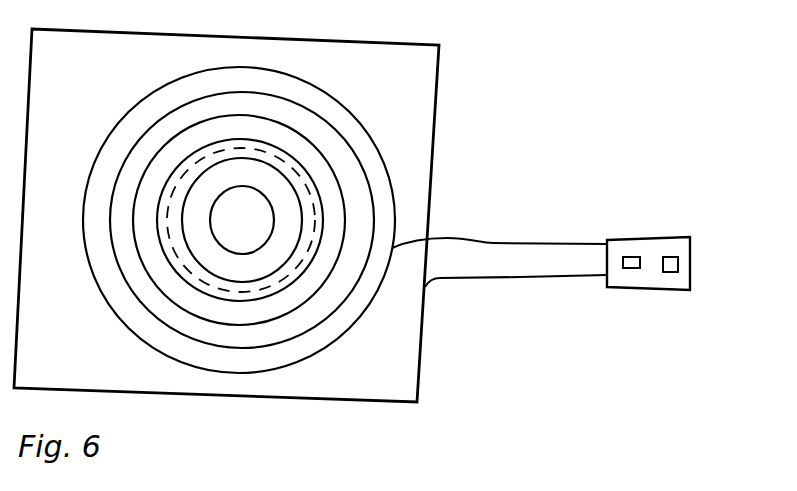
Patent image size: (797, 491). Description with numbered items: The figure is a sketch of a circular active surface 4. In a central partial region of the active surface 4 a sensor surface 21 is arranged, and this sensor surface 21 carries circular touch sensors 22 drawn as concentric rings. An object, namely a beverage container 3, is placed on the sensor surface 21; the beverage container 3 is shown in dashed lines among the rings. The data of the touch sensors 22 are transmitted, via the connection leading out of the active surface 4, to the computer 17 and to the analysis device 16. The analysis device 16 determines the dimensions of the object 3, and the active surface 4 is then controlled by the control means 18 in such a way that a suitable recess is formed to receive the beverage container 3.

The active surface 4 is at (254, 213).
The sensor surface 21 is at (347, 110).
The circular touch sensors 22 is at (275, 107).
The beverage container 3 is at (297, 170).
The computer 17 is at (690, 237).
The analysis device 16 is at (632, 257).
The control means 18 is at (672, 257).